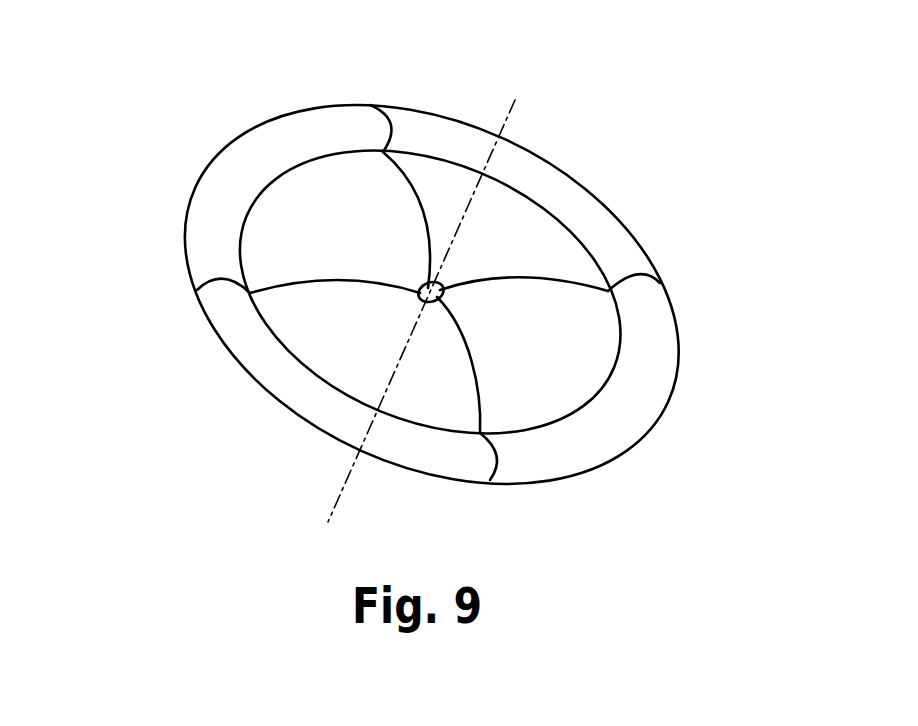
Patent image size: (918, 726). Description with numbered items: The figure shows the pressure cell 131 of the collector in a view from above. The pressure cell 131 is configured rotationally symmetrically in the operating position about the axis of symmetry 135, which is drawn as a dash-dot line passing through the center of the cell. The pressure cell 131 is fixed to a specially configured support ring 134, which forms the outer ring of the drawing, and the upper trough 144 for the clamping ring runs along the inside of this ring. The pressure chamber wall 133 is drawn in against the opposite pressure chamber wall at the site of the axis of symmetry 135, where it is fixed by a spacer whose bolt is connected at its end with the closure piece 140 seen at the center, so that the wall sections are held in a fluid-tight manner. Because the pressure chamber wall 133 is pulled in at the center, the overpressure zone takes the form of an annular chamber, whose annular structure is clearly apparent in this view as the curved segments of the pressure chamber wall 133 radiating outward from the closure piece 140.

The pressure cell 131 is at (333, 233).
The pressure chamber wall 133 is at (543, 323).
The support ring 134 is at (335, 410).
The axis of symmetry 135 is at (508, 118).
The closure piece 140 is at (437, 300).
The upper trough 144 is at (280, 173).